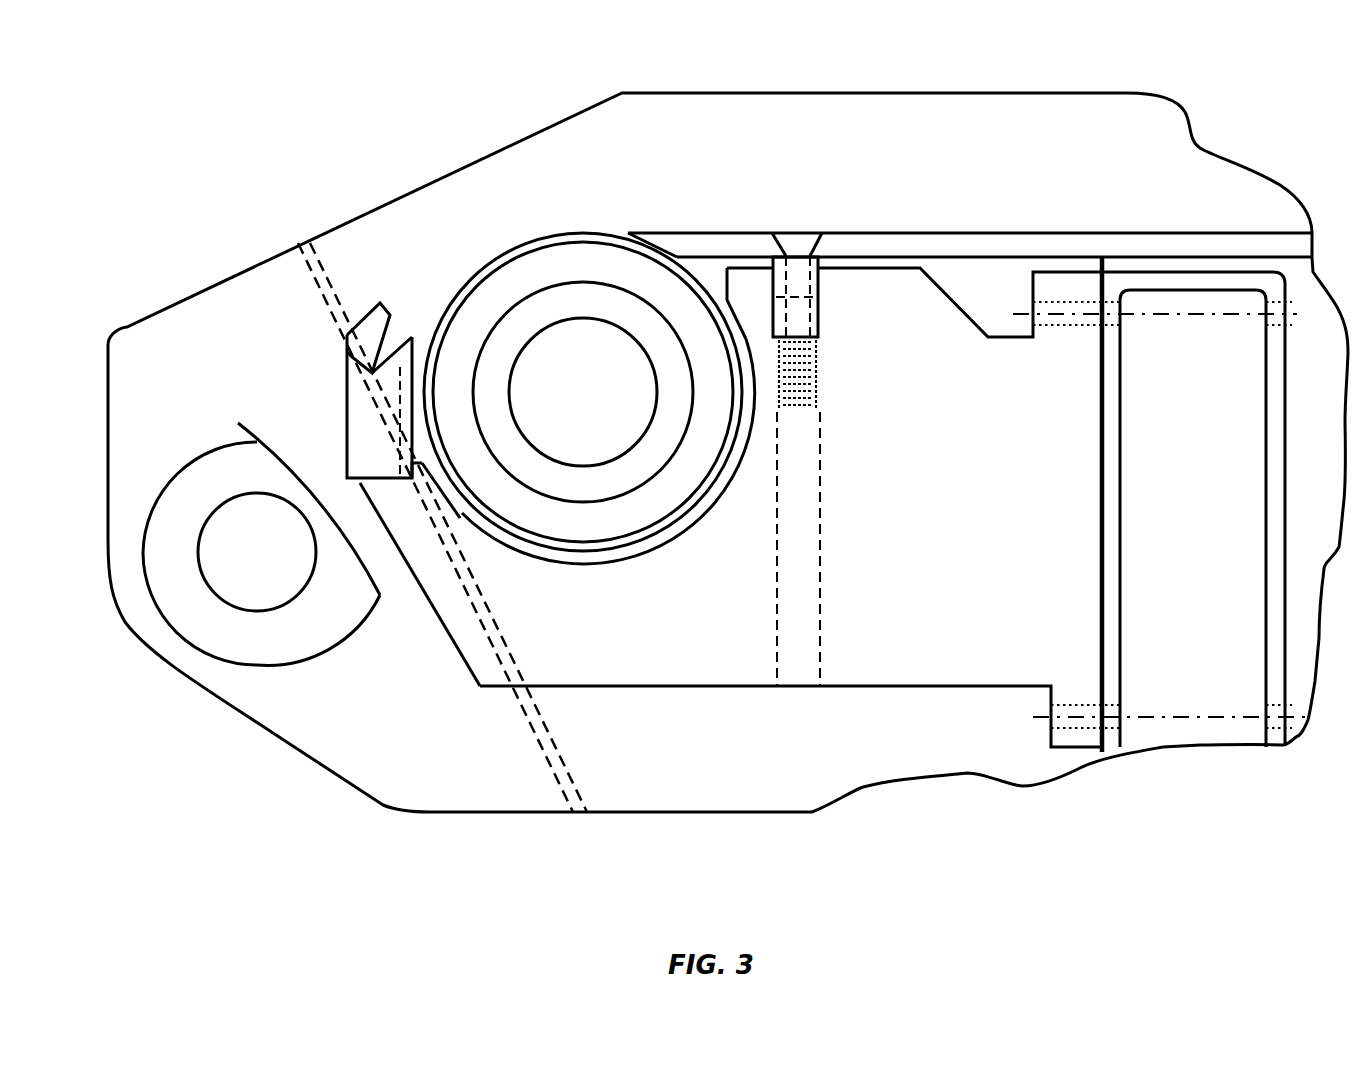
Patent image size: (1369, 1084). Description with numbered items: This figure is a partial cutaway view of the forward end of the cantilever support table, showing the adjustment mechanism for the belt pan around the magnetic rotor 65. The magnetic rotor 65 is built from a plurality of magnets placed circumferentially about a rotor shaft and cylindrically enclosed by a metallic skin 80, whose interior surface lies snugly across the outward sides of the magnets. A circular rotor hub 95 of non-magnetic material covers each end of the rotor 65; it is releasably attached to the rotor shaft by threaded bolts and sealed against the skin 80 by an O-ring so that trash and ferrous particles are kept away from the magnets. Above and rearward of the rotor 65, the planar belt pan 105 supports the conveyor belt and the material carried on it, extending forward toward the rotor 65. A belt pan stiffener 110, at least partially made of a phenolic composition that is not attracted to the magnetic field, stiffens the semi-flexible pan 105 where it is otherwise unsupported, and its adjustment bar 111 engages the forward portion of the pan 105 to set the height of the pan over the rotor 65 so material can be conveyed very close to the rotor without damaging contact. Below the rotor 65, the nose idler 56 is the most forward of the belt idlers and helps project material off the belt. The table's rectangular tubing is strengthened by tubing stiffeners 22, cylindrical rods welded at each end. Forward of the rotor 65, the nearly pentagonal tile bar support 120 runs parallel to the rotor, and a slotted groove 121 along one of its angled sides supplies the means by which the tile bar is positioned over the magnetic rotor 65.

The tubing stiffener 22 is at (505, 653).
The nose idler 56 is at (272, 653).
The magnetic rotor 65 is at (597, 408).
The metallic skin 80 is at (683, 513).
The rotor hub 95 is at (535, 227).
The belt pan 105 is at (1020, 234).
The belt pan stiffener 110 is at (689, 664).
The adjustment bar 111 is at (817, 316).
The tile bar support 120 is at (355, 423).
The slotted groove 121 is at (384, 340).